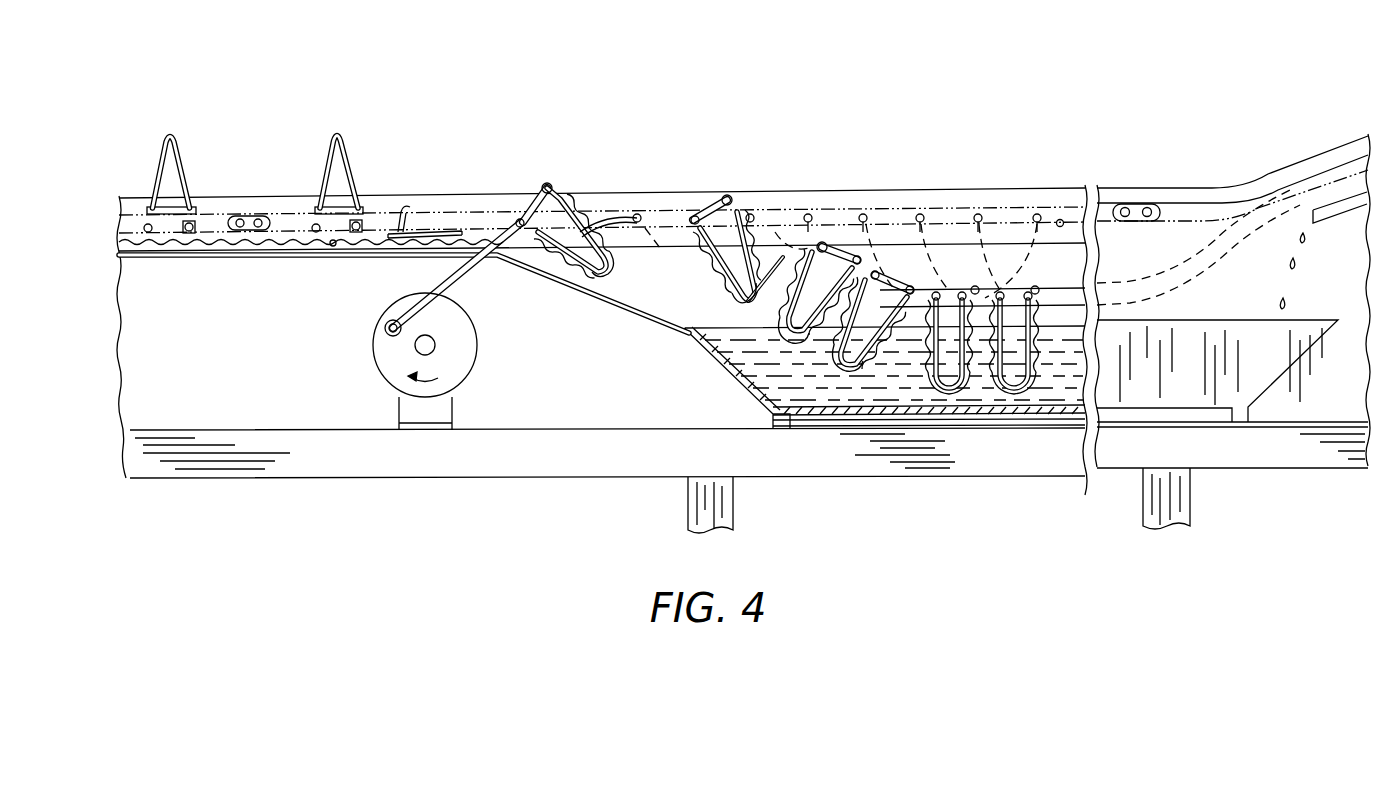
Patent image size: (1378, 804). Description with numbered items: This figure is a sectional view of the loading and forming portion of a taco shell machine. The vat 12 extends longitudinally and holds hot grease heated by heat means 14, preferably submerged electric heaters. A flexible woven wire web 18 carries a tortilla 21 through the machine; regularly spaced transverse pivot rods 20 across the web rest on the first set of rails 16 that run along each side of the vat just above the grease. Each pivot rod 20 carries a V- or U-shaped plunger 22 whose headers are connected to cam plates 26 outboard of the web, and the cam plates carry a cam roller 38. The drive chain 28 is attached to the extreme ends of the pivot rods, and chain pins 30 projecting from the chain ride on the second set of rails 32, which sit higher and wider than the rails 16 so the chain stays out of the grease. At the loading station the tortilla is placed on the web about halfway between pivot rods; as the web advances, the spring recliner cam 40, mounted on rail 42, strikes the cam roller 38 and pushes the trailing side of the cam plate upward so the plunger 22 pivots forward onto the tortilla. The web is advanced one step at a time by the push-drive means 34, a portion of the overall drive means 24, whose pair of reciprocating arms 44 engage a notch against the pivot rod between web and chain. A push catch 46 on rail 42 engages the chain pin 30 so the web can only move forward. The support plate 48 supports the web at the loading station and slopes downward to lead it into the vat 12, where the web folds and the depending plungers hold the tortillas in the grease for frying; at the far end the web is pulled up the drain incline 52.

The vat 12 is at (723, 368).
The heat means 14 is at (1002, 420).
The first set of rails 16 is at (1097, 318).
The web 18 is at (627, 272).
The pivot rods 20 is at (203, 198).
The tortilla 21 is at (443, 200).
The plunger 22 is at (175, 135).
The drive means 24 is at (380, 376).
The cam plates 26 is at (178, 225).
The drive chain 28 is at (252, 230).
The chain pins 30 is at (643, 215).
The second set of rails 32 is at (1062, 220).
The push-drive means 34 is at (470, 380).
The cam roller 38 is at (310, 222).
The spring recliner cam 40 is at (403, 200).
The rail 42 is at (1287, 163).
The arms 44 is at (450, 272).
The push catch 46 is at (620, 215).
The support plate 48 is at (333, 246).
The drain incline 52 is at (1333, 200).